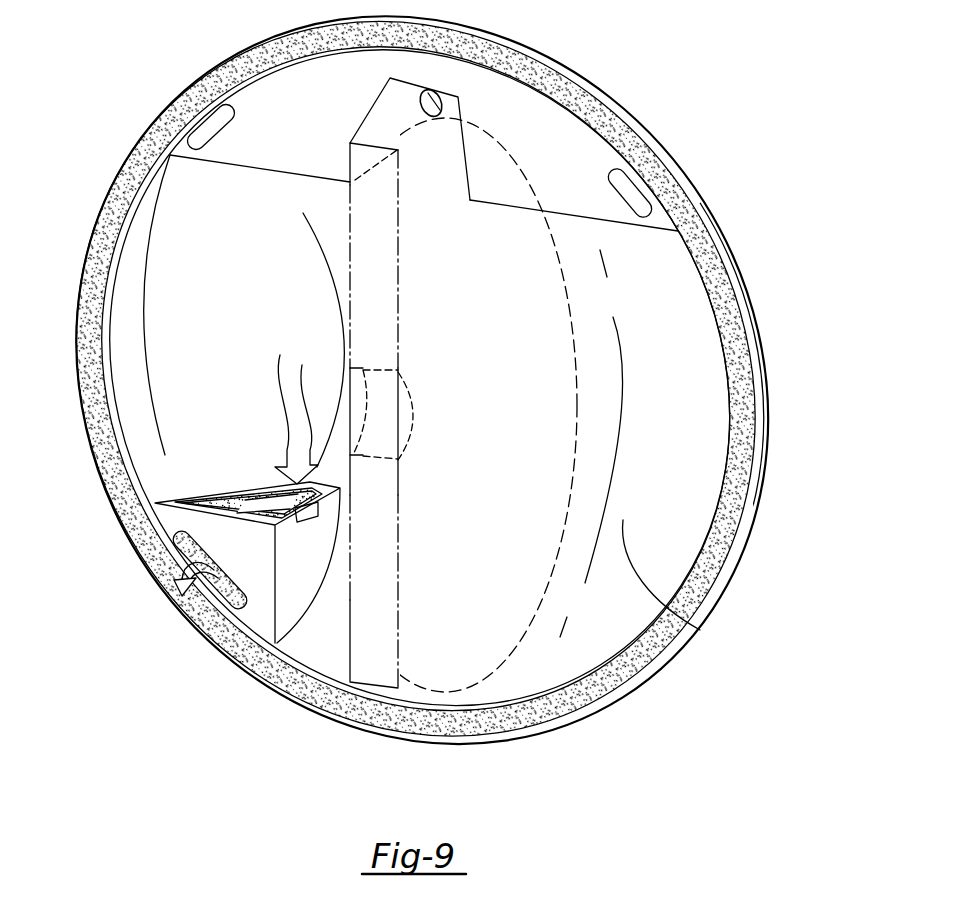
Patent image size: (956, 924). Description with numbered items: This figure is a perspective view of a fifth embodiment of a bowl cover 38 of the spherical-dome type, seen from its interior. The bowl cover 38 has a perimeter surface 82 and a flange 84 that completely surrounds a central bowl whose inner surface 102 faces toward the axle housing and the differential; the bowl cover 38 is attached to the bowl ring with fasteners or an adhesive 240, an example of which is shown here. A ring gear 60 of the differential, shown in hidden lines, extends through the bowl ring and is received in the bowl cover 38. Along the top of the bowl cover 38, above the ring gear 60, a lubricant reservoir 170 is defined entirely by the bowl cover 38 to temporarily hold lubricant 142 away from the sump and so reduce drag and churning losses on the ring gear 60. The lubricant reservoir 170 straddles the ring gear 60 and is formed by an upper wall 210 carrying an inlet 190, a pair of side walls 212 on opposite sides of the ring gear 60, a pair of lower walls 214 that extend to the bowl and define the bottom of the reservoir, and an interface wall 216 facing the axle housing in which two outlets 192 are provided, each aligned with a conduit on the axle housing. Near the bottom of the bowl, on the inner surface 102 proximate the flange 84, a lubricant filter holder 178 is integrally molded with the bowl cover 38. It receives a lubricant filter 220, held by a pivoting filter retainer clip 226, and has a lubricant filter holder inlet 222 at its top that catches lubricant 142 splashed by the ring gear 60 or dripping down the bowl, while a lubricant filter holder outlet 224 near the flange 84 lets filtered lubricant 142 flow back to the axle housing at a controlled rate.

The bowl cover 38 is at (131, 150).
The flange 84 is at (128, 216).
The perimeter surface 82 is at (750, 333).
The adhesive 240 is at (742, 448).
The ring gear 60 is at (528, 398).
The lubricant reservoir 170 is at (272, 143).
The lower wall 214 is at (247, 167).
The outlet 192 is at (220, 114).
The upper wall 210 is at (406, 102).
The side wall 212 is at (390, 110).
The interface wall 216 is at (315, 120).
The inlet 190 is at (448, 95).
The lubricant filter holder inlet 222 is at (318, 482).
The lubricant 142 is at (287, 372).
The lubricant filter holder 178 is at (186, 485).
The lubricant filter 220 is at (197, 503).
The filter retainer clip 226 is at (263, 500).
The lubricant filter holder outlet 224 is at (163, 552).
The inner surface 102 is at (700, 630).